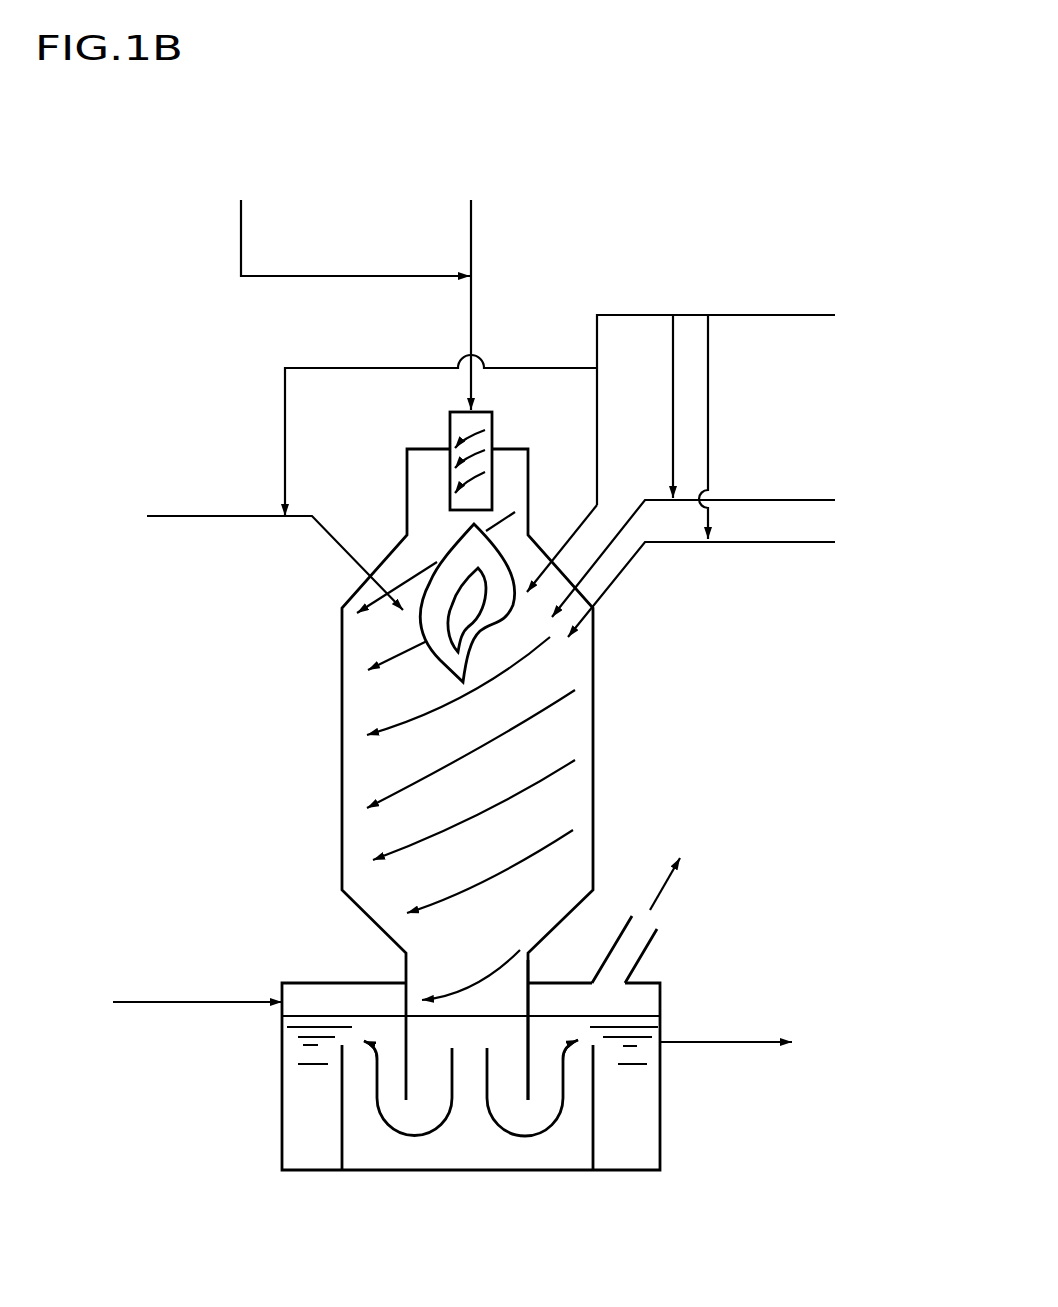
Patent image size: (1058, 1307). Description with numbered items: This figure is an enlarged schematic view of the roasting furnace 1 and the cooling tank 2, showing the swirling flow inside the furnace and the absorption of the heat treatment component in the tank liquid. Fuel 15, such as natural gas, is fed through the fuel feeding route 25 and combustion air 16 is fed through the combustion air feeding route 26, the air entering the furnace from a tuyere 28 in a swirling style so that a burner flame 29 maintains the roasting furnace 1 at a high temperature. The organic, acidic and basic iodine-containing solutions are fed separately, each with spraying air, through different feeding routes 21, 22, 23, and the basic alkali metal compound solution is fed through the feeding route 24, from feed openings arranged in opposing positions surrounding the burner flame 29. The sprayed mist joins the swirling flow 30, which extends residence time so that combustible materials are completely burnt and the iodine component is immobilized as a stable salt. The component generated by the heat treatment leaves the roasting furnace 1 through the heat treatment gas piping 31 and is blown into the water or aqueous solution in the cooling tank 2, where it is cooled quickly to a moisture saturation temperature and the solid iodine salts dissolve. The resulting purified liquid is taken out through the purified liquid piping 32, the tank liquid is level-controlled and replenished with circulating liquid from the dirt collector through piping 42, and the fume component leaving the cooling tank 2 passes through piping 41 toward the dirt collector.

The roasting furnace 1 is at (340, 768).
The cooling tank 2 is at (660, 1138).
The fuel 15 is at (346, 217).
The combustion air 16 is at (737, 416).
The feeding route for iodine-containing solution 21 is at (471, 305).
The feeding route for iodine-containing solution 22 is at (173, 518).
The feeding route for iodine-containing solution 23 is at (780, 546).
The feeding route for alkali metal compound solution 24 is at (768, 497).
The fuel feeding route 25 is at (318, 278).
The combustion air feeding route 26 is at (757, 310).
The tuyere 28 is at (550, 553).
The burner flame 29 is at (423, 632).
The swirling flow 30 is at (558, 703).
The heat treatment gas piping 31 is at (530, 1053).
The purified liquid piping 32 is at (745, 1045).
The piping 41 is at (667, 887).
The piping 42 is at (162, 1005).